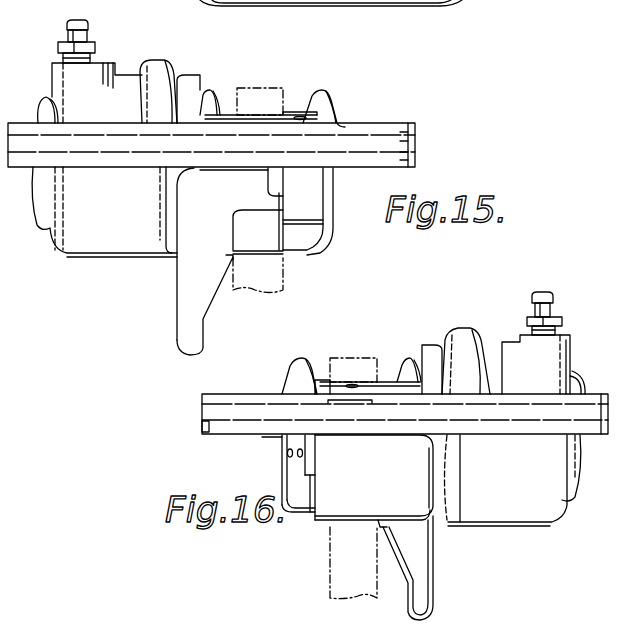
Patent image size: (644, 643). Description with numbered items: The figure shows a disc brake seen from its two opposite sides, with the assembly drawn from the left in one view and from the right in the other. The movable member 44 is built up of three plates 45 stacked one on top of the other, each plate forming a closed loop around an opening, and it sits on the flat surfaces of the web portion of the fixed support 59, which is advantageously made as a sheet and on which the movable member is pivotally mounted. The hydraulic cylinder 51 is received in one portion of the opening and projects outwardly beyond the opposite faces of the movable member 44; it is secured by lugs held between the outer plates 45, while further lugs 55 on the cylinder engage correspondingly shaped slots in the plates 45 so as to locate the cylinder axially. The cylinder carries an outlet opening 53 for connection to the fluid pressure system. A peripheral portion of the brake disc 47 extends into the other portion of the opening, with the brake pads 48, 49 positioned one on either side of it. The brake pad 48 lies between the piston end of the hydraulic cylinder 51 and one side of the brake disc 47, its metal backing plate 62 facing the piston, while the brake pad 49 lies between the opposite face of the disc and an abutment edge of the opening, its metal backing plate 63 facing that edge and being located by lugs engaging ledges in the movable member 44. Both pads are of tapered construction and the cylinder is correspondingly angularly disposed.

In FIG. 15, the movable member 44 is at (372, 131).
In FIG. 16, the movable member 44 is at (260, 442).
In FIG. 15, the plates 45 is at (410, 163).
In FIG. 16, the plates 45 is at (205, 418).
In FIG. 15, the brake disc 47 is at (283, 272).
In FIG. 16, the brake disc 47 is at (330, 552).
In FIG. 15, the brake pad 48 is at (238, 100).
In FIG. 16, the brake pad 48 is at (353, 370).
In FIG. 15, the brake pad 49 is at (300, 215).
In FIG. 16, the brake pad 49 is at (323, 380).
In FIG. 15, the hydraulic cylinder 51 is at (124, 86).
In FIG. 16, the hydraulic cylinder 51 is at (524, 372).
In FIG. 15, the outlet opening 53 is at (68, 37).
In FIG. 16, the outlet opening 53 is at (532, 307).
In FIG. 15, the lugs 55 is at (161, 76).
In FIG. 16, the lugs 55 is at (471, 348).
In FIG. 15, the fixed support 59 is at (177, 287).
In FIG. 16, the fixed support 59 is at (430, 563).
In FIG. 15, the metal backing plate 62 is at (207, 94).
In FIG. 16, the metal backing plate 62 is at (401, 366).
In FIG. 15, the metal backing plate 63 is at (326, 101).
In FIG. 16, the metal backing plate 63 is at (286, 374).